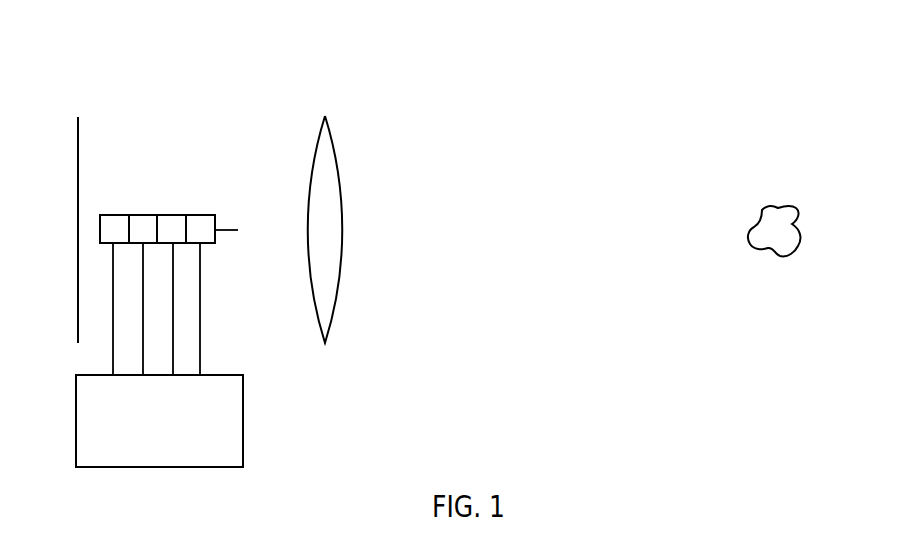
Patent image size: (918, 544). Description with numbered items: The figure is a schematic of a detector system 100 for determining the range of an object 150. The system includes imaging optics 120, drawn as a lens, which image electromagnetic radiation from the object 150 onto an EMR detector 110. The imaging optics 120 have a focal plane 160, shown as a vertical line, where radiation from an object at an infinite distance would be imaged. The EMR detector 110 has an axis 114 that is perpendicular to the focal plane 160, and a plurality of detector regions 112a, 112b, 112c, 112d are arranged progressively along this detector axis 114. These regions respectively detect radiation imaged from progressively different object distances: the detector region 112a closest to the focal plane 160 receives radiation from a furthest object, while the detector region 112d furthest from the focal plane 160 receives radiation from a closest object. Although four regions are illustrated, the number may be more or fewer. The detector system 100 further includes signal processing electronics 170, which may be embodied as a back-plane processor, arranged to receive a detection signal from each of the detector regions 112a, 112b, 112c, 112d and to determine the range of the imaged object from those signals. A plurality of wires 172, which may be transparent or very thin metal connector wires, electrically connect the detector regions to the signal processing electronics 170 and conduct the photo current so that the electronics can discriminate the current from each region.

The detector system 100 is at (268, 90).
The EMR detector 110 is at (222, 243).
The detector region 112a is at (117, 215).
The detector region 112b is at (147, 215).
The detector region 112c is at (173, 215).
The detector region 112d is at (203, 215).
The detector axis 114 is at (228, 229).
The imaging optics 120 is at (332, 137).
The object 150 is at (780, 208).
The focal plane 160 is at (77, 128).
The signal processing electronics 170 is at (243, 445).
The wires 172 is at (200, 328).